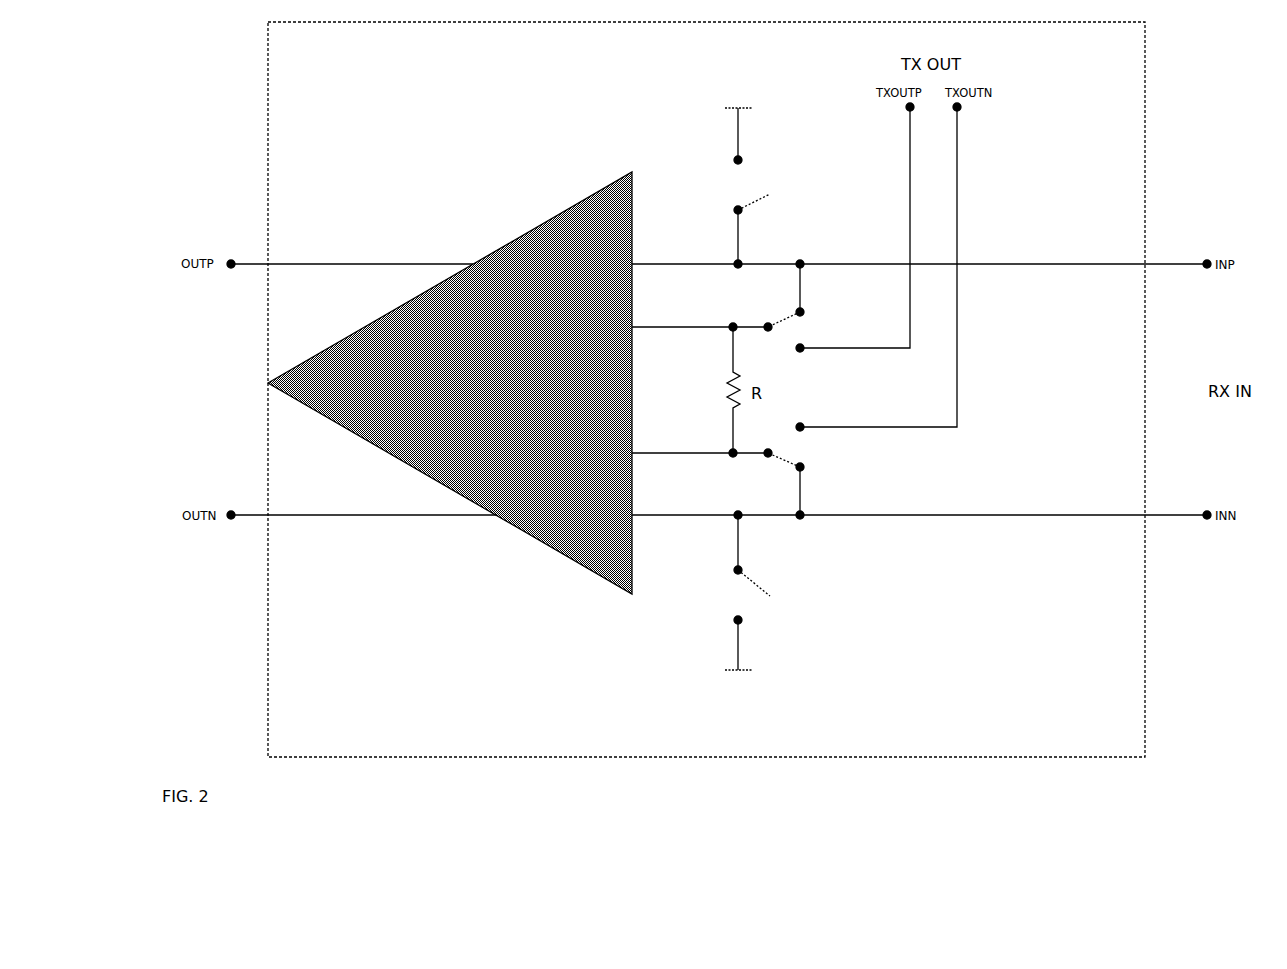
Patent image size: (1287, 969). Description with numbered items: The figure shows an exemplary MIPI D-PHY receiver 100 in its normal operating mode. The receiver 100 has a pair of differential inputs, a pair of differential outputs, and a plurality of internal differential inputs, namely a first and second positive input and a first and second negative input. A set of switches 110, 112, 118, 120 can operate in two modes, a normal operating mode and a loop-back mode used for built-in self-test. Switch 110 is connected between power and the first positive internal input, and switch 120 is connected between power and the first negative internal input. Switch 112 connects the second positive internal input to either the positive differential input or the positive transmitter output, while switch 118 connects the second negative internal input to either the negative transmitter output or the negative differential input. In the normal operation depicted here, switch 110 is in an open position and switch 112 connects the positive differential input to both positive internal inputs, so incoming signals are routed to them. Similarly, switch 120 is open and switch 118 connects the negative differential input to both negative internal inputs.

The receiver 100 is at (450, 383).
The switch 110 is at (730, 186).
The switch 112 is at (839, 229).
The switch 118 is at (862, 311).
The switch 120 is at (744, 592).